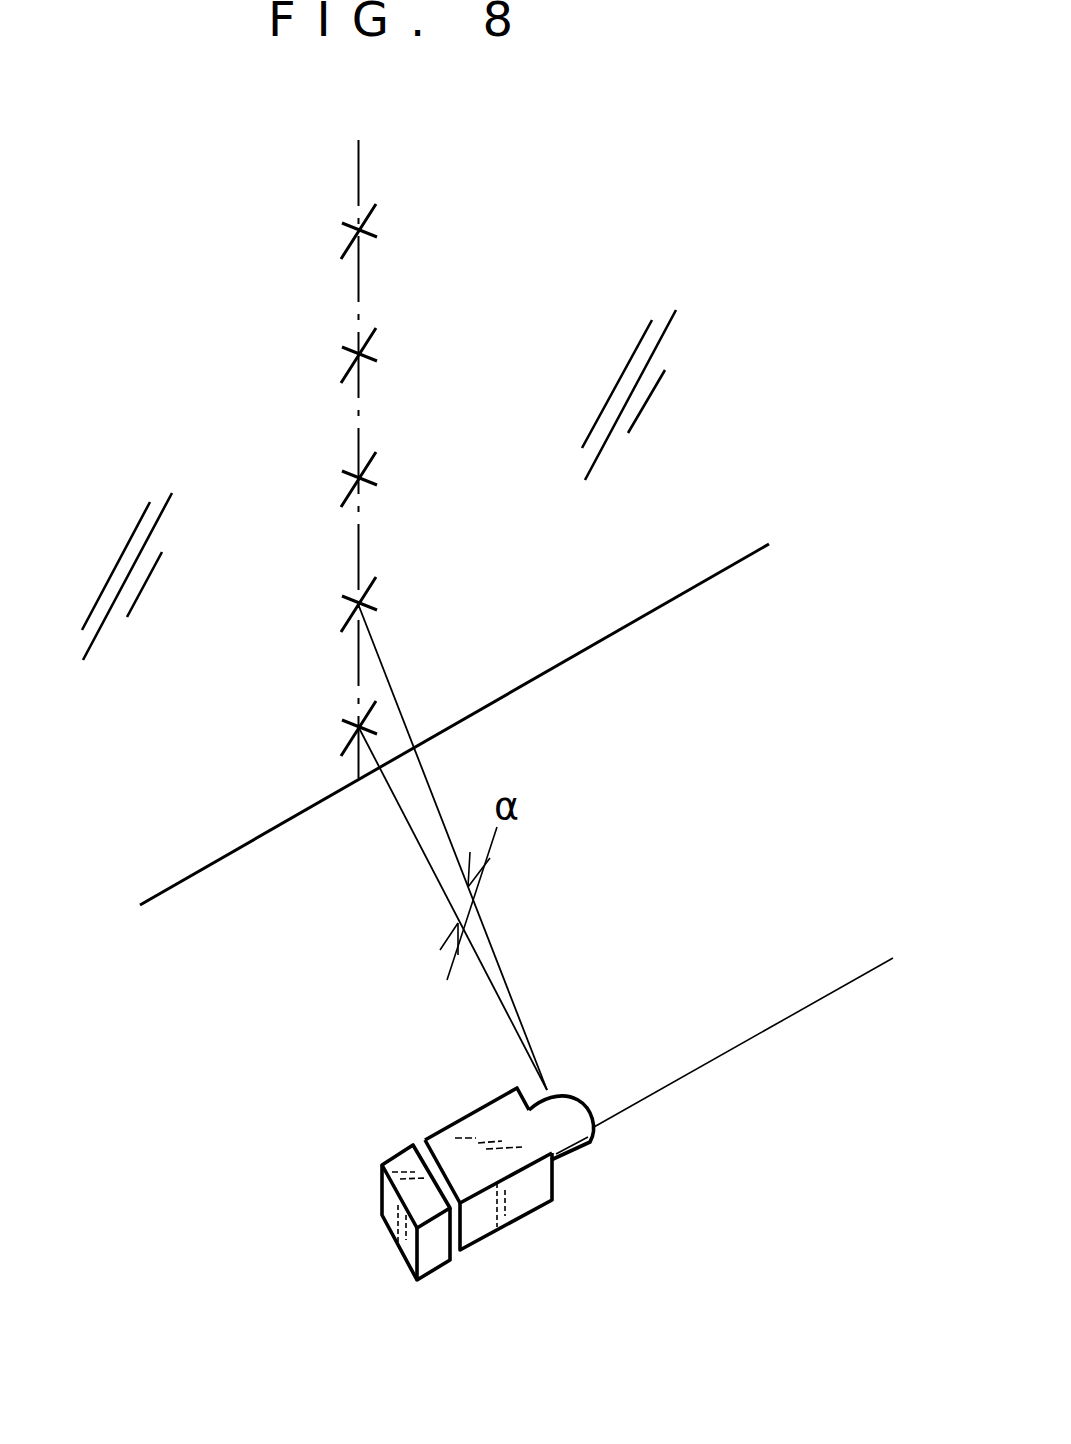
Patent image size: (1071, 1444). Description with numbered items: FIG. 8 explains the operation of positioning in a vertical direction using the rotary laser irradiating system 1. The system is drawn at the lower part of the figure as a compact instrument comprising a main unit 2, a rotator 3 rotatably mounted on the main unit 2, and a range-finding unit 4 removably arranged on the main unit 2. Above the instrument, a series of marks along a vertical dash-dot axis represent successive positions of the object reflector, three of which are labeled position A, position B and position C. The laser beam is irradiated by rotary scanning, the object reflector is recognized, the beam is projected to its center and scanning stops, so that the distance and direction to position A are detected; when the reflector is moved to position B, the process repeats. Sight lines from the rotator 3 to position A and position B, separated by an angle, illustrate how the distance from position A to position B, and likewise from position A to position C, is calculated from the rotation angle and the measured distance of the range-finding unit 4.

The rotary laser irradiating system 1 is at (463, 1193).
The main unit 2 is at (520, 1224).
The rotator 3 is at (590, 1143).
The range-finding unit 4 is at (437, 1272).
The position A is at (285, 757).
The position B is at (280, 632).
The position C is at (280, 505).